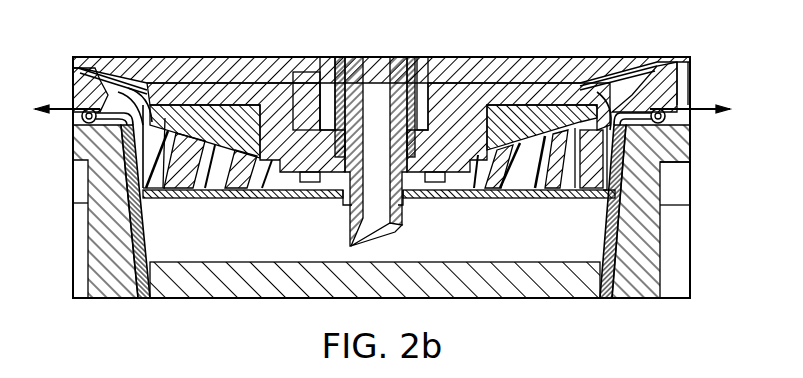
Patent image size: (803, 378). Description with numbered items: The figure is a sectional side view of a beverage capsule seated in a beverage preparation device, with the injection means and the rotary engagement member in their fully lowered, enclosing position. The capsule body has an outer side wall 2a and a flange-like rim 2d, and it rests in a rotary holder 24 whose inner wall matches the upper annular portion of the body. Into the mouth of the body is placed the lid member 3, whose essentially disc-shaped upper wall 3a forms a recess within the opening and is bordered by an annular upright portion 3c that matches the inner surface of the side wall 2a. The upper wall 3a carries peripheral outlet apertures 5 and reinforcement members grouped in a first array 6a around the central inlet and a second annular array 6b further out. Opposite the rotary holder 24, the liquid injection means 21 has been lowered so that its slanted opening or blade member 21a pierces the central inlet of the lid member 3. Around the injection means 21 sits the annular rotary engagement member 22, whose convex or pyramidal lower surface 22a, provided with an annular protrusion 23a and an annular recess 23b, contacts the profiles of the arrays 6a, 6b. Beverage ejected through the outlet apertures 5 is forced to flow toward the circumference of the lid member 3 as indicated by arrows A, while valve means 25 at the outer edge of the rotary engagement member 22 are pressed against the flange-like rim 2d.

The outer side wall 2a is at (605, 250).
The flange-like rim 2d is at (85, 123).
The lid member 3 is at (618, 172).
The upper wall 3a is at (458, 197).
The annular upright portion 3c is at (690, 158).
The peripheral outlet apertures 5 is at (293, 190).
The first array of reinforcement members 6a is at (258, 183).
The second annular array of reinforcement members 6b is at (192, 183).
The liquid injection means 21 is at (352, 62).
The slanted opening or blade member 21a is at (375, 226).
The rotary engagement member 22 is at (203, 118).
The lower surface of the rotary engagement member 22a is at (224, 152).
The annular protrusion 23a is at (122, 93).
The annular recess 23b is at (148, 103).
The rotary holder 24 is at (653, 250).
The valve means 25 is at (658, 68).
The beverage flow direction arrows A is at (62, 106).